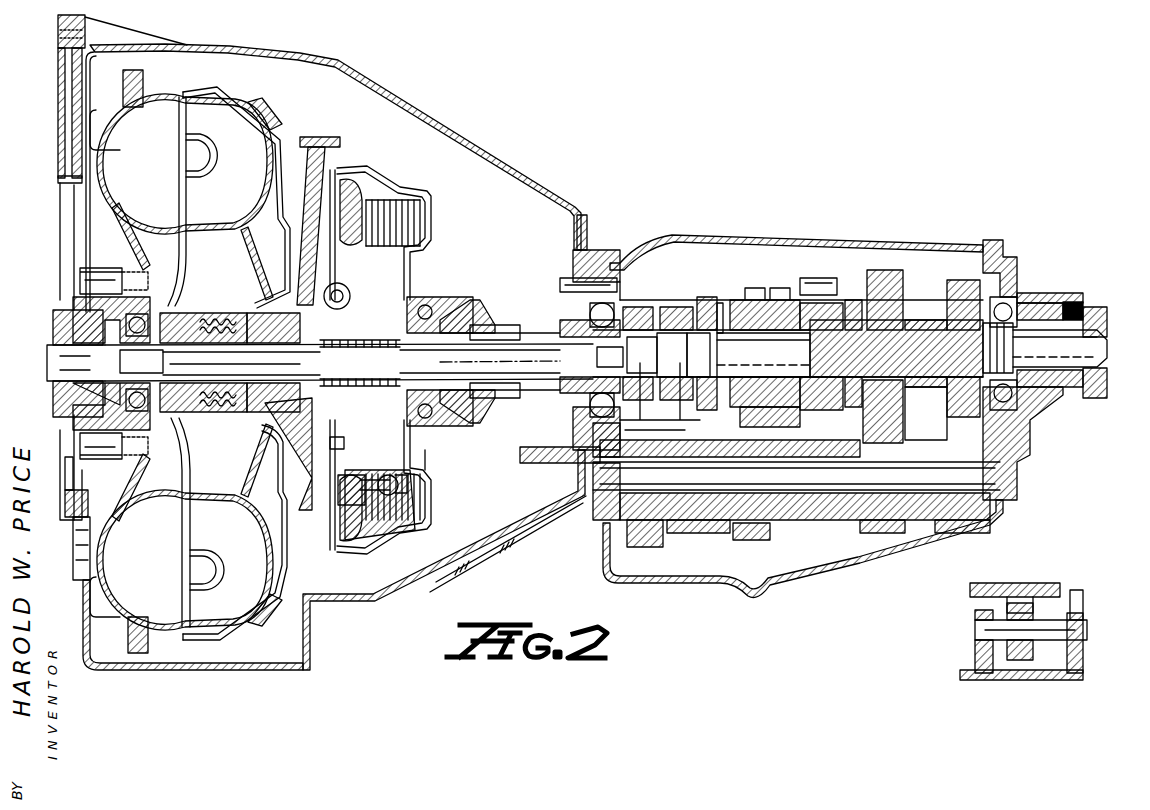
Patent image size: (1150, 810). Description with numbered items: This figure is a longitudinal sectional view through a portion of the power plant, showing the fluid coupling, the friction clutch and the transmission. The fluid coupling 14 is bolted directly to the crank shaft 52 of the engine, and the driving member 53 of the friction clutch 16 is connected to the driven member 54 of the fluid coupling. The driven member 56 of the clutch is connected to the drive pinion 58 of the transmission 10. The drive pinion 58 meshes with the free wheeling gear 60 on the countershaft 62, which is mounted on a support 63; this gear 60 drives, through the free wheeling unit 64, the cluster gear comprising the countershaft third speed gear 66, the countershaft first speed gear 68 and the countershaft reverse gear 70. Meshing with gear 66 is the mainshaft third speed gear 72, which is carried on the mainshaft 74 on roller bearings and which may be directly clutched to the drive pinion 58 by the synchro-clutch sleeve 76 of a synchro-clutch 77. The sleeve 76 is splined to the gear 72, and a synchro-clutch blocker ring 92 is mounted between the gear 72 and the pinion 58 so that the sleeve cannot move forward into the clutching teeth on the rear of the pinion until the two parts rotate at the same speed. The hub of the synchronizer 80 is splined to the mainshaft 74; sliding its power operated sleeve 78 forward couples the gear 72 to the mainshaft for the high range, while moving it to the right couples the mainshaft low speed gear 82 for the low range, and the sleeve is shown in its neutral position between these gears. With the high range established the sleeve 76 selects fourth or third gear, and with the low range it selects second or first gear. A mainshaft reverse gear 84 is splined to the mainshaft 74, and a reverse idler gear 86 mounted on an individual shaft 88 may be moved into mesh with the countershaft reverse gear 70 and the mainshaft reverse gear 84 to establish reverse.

The transmission 10 is at (722, 228).
The fluid coupling 14 is at (222, 86).
The friction clutch 16 is at (420, 157).
The crank shaft 52 is at (62, 318).
The driving member 53 is at (336, 172).
The driven member 54 is at (246, 166).
The driven member 56 is at (370, 200).
The drive pinion 58 is at (576, 375).
The free wheeling gear 60 is at (624, 533).
The countershaft 62 is at (812, 487).
The support 63 is at (1000, 472).
The free wheeling unit 64 is at (676, 535).
The countershaft third speed gear 66 is at (753, 540).
The countershaft first speed gear 68 is at (878, 522).
The countershaft reverse gear 70 is at (958, 520).
The mainshaft third speed gear 72 is at (757, 300).
The mainshaft 74 is at (722, 338).
The synchro-clutch sleeve 76 is at (705, 297).
The synchro-clutch 77 is at (662, 312).
The power operated sleeve 78 is at (812, 295).
The synchronizer 80 is at (850, 300).
The mainshaft low speed gear 82 is at (888, 272).
The mainshaft reverse gear 84 is at (960, 280).
The reverse idler gear 86 is at (1026, 662).
The individual shaft 88 is at (985, 632).
The synchro-clutch blocker ring 92 is at (670, 307).